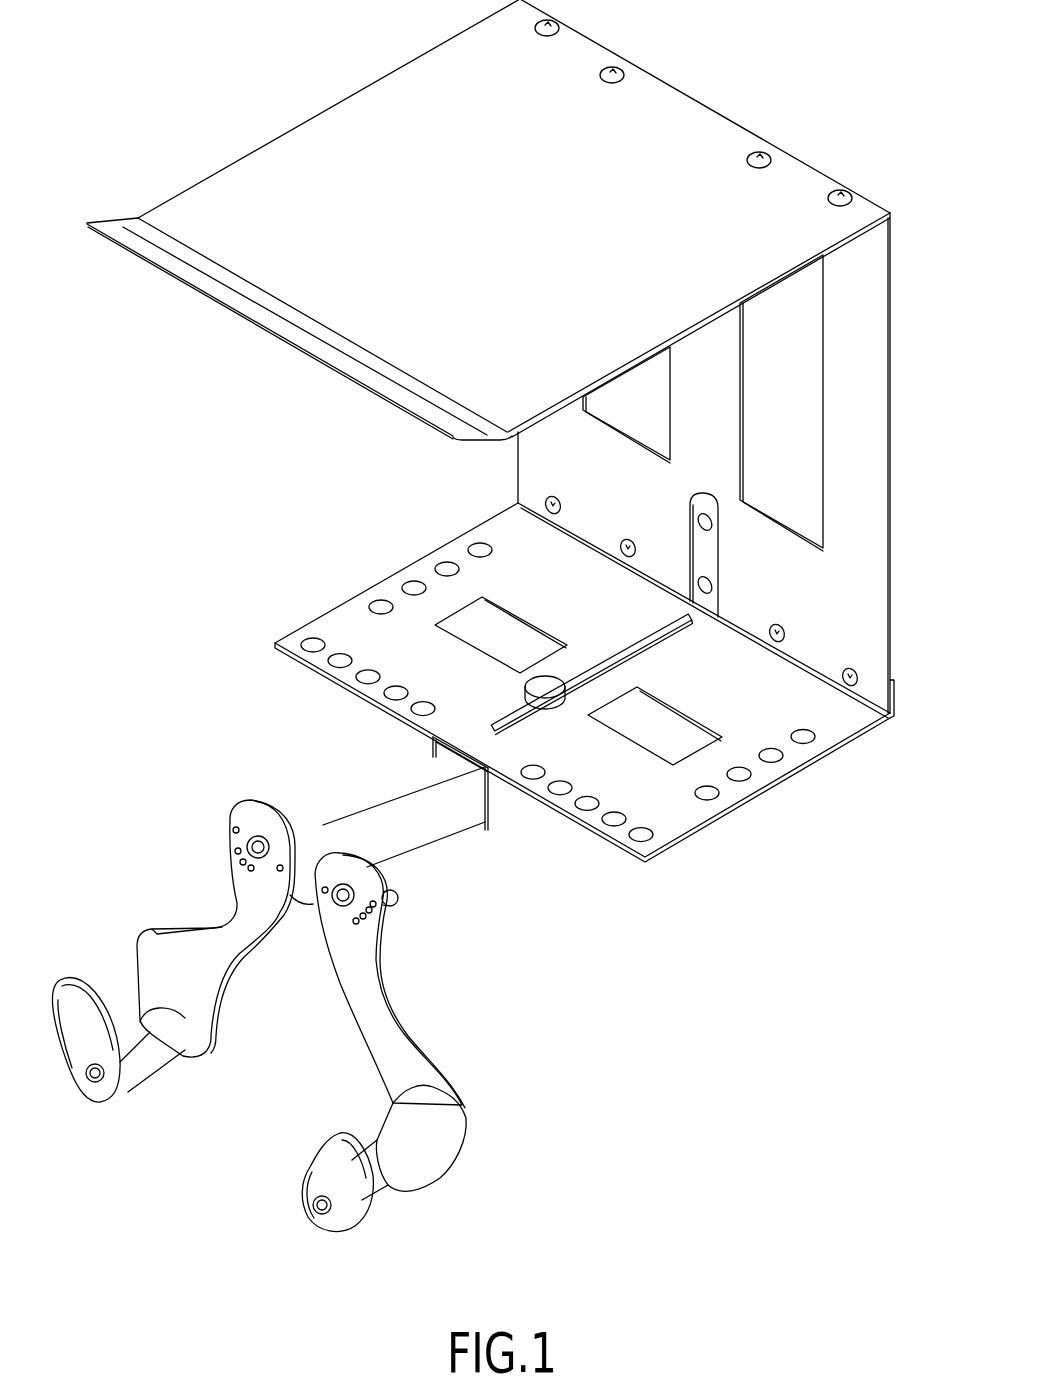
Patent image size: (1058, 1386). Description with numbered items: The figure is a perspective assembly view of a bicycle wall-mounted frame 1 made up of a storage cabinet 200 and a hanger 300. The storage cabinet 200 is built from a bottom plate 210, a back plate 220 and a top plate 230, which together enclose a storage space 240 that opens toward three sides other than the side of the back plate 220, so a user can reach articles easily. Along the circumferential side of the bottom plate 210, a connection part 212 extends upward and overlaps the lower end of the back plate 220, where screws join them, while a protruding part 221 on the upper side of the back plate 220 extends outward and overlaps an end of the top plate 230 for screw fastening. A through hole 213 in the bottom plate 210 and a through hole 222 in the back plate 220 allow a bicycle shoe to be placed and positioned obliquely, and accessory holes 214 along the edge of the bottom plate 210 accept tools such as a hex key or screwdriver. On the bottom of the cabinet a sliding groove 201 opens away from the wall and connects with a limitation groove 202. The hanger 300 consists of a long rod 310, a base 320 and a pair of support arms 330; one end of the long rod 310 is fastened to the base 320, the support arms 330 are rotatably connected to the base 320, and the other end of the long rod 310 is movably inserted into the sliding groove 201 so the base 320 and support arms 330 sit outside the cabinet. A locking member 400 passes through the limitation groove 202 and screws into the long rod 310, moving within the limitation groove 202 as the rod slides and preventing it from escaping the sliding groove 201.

The bicycle wall-mounted frame 1 is at (712, 982).
The storage cabinet 200 is at (230, 137).
The top plate 230 is at (358, 107).
The back plate 220 is at (870, 357).
The protruding part 221 is at (862, 240).
The through hole 222 is at (628, 428).
The storage space 240 is at (860, 636).
The bottom plate 210 is at (683, 840).
The connection part 212 is at (897, 693).
The through hole 213 is at (497, 615).
The accessory hole 214 is at (380, 603).
The limitation groove 202 is at (630, 647).
The sliding groove 201 is at (480, 807).
The locking member 400 is at (525, 692).
The hanger 300 is at (198, 800).
The long rod 310 is at (363, 807).
The base 320 is at (310, 903).
The support arms 330 is at (220, 920).